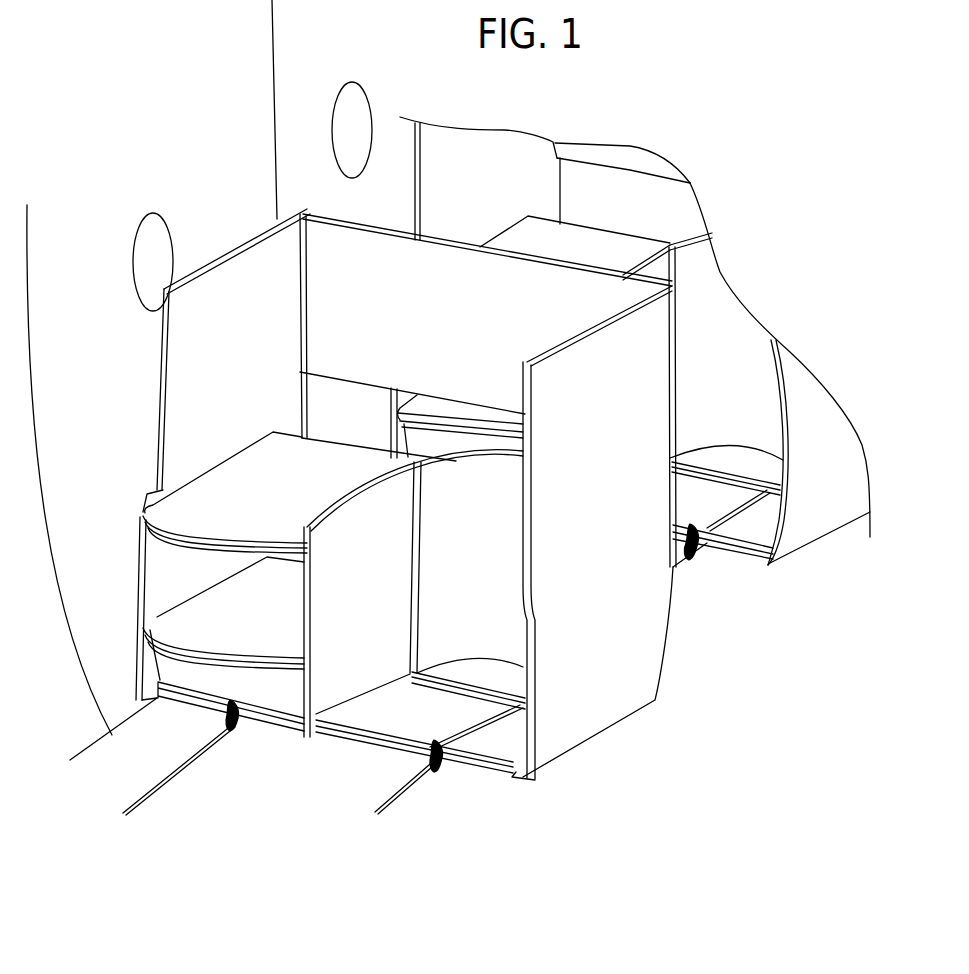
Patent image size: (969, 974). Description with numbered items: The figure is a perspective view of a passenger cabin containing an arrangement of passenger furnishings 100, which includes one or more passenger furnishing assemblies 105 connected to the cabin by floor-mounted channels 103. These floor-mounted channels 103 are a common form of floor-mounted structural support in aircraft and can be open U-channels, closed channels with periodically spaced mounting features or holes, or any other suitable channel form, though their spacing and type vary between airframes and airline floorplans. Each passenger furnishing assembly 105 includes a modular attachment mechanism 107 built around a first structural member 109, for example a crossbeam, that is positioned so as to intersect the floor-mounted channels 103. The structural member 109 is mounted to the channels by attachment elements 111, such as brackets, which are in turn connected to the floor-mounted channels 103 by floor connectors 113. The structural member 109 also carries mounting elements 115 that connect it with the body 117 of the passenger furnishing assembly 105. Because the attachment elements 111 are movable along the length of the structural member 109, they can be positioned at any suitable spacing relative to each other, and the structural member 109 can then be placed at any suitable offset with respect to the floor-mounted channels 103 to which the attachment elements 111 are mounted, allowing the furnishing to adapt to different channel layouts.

The arrangement of passenger furnishings 100 is at (168, 183).
The floor-mounted channels 103 is at (157, 790).
The passenger furnishing assembly 105 is at (772, 268).
The modular attachment mechanism 107 is at (265, 759).
The first structural member 109 is at (203, 710).
The attachment elements 111 is at (438, 750).
The floor connectors 113 is at (435, 765).
The mounting elements 115 is at (531, 772).
The body 117 is at (567, 728).